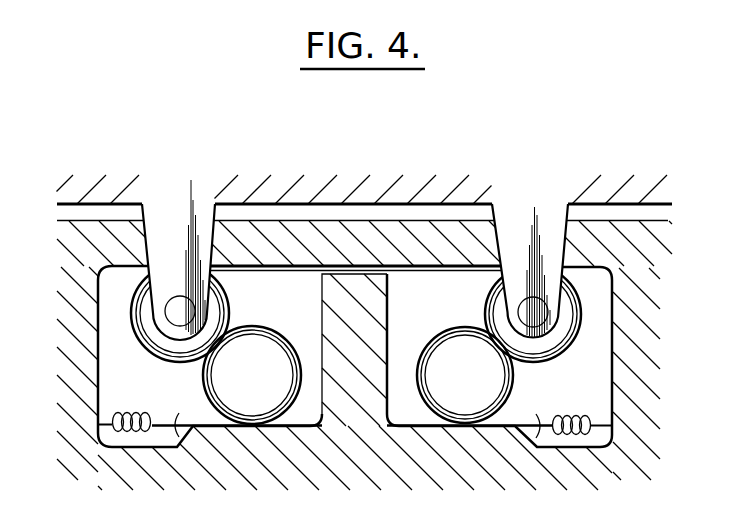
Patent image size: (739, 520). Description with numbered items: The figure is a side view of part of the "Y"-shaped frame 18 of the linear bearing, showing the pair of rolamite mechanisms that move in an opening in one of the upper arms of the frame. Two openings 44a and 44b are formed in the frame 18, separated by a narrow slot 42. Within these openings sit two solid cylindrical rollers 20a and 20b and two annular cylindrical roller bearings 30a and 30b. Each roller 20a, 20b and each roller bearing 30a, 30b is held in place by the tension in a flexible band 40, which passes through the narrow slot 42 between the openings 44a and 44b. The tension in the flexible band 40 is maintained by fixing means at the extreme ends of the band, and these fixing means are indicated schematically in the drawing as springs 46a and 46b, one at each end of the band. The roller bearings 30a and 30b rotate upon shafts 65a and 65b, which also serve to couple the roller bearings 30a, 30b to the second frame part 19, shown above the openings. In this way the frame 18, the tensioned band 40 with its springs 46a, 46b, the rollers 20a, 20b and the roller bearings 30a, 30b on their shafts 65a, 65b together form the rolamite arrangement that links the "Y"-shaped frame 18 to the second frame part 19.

The "Y"-shaped frame 18 is at (301, 479).
The second frame part 19 is at (266, 162).
The solid cylindrical roller 20a is at (272, 389).
The solid cylindrical roller 20b is at (487, 389).
The annular cylindrical roller bearing 30a is at (156, 334).
The annular cylindrical roller bearing 30b is at (566, 328).
The flexible band 40 is at (299, 276).
The narrow slot 42 is at (392, 275).
The opening 44a is at (139, 387).
The opening 44b is at (594, 375).
The spring 46a is at (131, 434).
The spring 46b is at (571, 436).
The shaft 65a is at (172, 311).
The shaft 65b is at (544, 312).